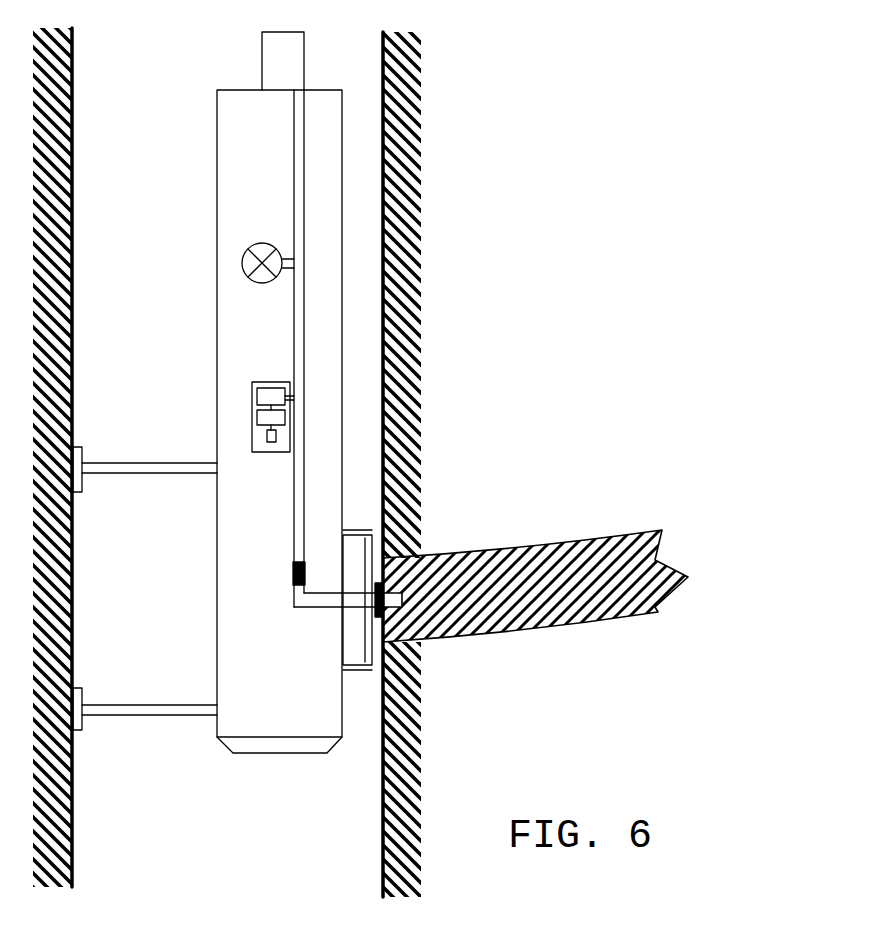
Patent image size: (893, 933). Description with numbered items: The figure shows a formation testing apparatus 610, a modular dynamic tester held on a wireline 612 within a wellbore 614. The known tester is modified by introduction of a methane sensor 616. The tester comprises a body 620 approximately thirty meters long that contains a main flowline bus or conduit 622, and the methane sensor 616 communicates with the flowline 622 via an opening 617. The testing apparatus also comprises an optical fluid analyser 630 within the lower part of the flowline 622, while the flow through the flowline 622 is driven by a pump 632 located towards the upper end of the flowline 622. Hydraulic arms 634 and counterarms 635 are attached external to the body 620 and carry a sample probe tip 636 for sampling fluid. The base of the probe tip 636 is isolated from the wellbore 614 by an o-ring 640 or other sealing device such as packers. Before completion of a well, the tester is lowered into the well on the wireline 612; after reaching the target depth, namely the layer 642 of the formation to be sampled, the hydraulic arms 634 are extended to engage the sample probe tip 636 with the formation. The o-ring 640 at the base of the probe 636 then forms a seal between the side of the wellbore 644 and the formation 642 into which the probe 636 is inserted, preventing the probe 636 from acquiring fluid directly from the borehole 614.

The formation testing apparatus 610 is at (178, 91).
The wireline 612 is at (303, 68).
The wellbore 614 is at (201, 840).
The methane sensor 616 is at (256, 396).
The opening 617 is at (288, 401).
The body 620 is at (217, 572).
The flowline 622 is at (294, 200).
The optical fluid analyser 630 is at (292, 573).
The pump 632 is at (242, 263).
The hydraulic arms 634 is at (355, 533).
The counterarms 635 is at (143, 715).
The sample probe tip 636 is at (440, 618).
The o-ring 640 is at (387, 552).
The layer of the formation 642 is at (513, 540).
The side of the wellbore 644 is at (383, 793).